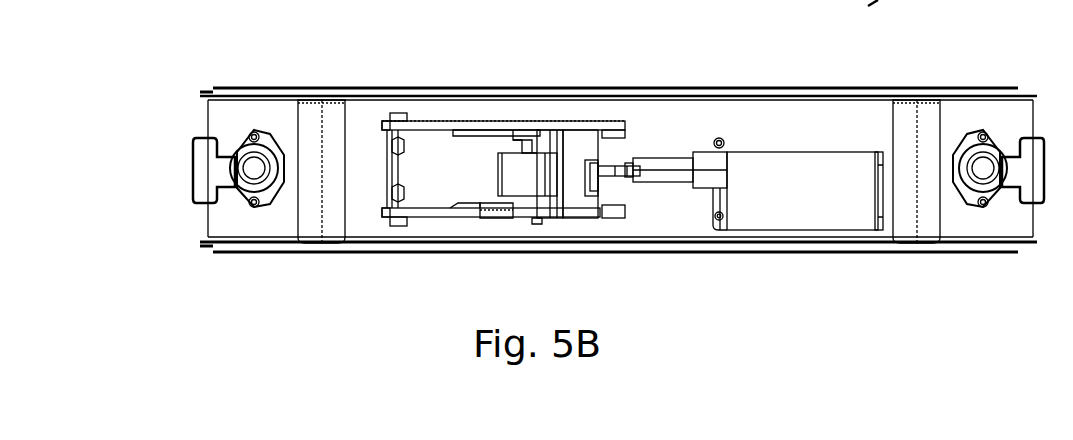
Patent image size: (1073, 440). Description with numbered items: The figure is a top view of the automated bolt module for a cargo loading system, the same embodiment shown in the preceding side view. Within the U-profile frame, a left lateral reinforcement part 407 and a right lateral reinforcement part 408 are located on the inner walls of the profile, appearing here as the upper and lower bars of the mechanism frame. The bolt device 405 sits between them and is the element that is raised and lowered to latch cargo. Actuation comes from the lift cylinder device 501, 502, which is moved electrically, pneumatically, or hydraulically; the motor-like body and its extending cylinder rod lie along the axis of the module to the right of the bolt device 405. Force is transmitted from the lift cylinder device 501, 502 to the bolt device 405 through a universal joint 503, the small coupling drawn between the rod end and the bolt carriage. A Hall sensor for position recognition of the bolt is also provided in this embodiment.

The bolt device 405 is at (578, 141).
The left lateral reinforcement part 407 is at (438, 123).
The right lateral reinforcement part 408 is at (423, 215).
The lift cylinder device 501 is at (792, 167).
The lift cylinder device 502 is at (667, 168).
The universal joint 503 is at (608, 166).